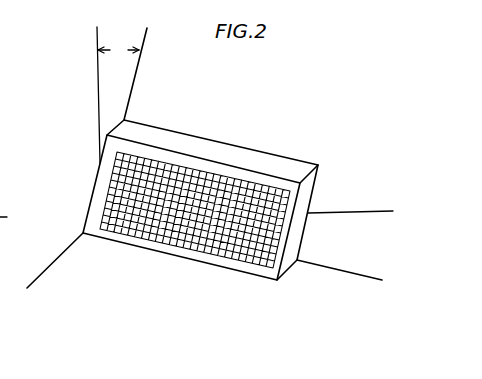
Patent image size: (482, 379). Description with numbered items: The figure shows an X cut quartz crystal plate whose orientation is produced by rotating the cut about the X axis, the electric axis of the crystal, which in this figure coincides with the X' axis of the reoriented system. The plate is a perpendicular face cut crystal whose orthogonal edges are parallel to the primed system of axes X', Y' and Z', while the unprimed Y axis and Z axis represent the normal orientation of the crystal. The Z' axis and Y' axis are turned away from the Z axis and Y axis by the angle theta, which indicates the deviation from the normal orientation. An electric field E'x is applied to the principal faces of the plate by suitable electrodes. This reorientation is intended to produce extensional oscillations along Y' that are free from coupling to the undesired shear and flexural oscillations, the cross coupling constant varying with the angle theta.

The electric field E'x is at (200, 208).
The Z axis Z is at (94, 85).
The Z' axis Z' is at (141, 64).
The Y axis Y is at (357, 215).
The Y' axis Y' is at (348, 276).
The X axis X is at (41, 273).